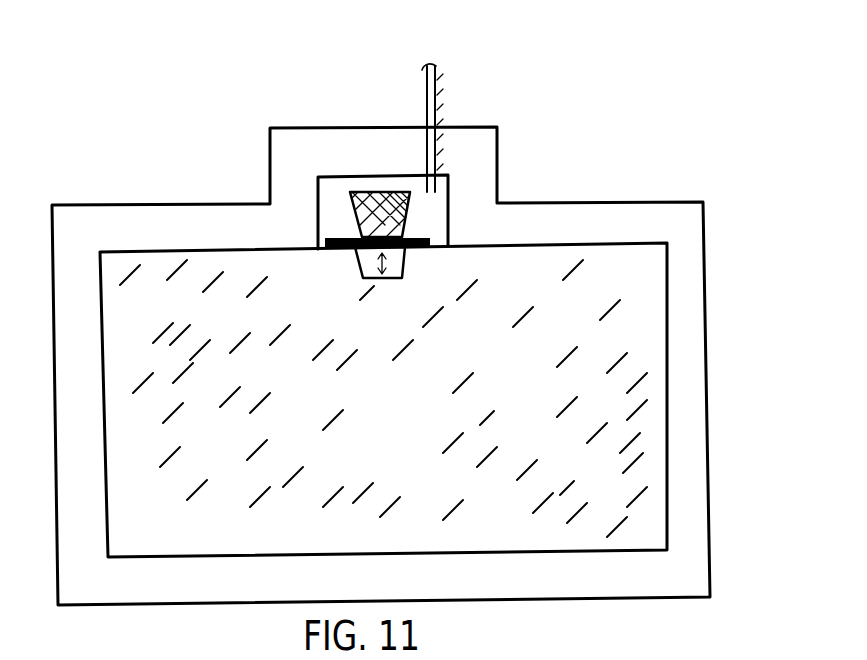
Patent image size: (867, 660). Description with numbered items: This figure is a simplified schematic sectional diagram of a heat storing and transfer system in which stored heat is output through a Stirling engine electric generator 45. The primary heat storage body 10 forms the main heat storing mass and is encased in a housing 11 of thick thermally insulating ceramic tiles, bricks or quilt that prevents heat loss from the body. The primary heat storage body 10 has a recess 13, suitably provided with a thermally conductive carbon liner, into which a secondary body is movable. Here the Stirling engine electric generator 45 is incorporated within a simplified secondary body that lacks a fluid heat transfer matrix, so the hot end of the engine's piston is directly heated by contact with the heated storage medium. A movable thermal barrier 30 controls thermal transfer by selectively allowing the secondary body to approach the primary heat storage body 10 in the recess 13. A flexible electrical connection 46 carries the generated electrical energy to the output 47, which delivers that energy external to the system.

The primary heat storage body 10 is at (542, 405).
The housing 11 is at (698, 352).
The recess 13 is at (405, 266).
The movable thermal barrier 30 is at (430, 236).
The Stirling Engine electric generator 45 is at (376, 230).
The flexible electrical connection 46 is at (428, 191).
The output 47 is at (442, 103).